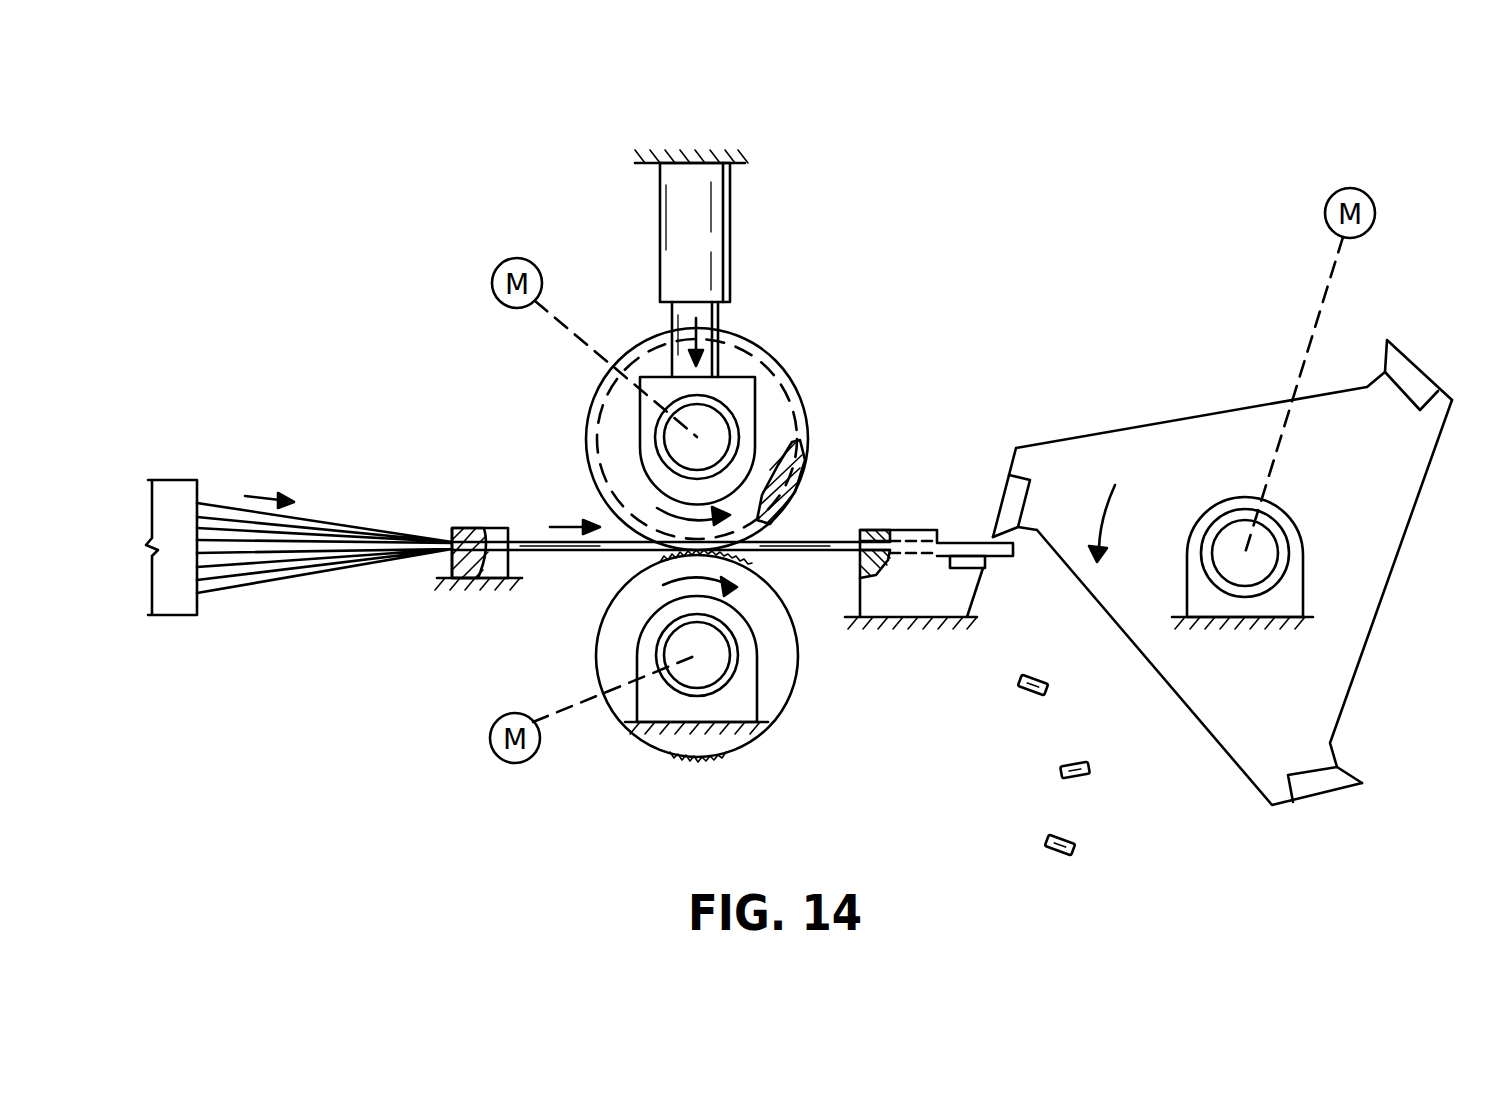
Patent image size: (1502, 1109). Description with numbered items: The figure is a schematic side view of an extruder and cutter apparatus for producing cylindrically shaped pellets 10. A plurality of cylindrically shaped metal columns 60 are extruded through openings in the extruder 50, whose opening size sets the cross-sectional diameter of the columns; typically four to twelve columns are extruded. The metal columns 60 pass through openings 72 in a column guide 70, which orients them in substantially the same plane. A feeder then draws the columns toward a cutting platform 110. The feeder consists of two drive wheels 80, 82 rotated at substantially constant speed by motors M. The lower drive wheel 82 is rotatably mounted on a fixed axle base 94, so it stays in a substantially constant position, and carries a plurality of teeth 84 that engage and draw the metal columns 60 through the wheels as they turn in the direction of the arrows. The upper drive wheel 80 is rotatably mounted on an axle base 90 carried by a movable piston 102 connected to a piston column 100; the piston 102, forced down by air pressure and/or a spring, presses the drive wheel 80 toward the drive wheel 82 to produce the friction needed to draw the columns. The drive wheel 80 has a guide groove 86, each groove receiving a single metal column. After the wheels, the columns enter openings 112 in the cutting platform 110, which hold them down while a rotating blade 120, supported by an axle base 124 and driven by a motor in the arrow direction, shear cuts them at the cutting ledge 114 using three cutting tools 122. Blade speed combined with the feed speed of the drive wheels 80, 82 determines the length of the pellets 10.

The pellets 10 is at (1012, 708).
The extruder 50 is at (172, 495).
The metal columns 60 is at (263, 587).
The column guide 70 is at (498, 528).
The openings 72 is at (470, 528).
The drive wheel 80 is at (815, 392).
The drive wheel 82 is at (795, 708).
The teeth 84 is at (695, 758).
The guide groove 86 is at (803, 466).
The axle base 90 is at (745, 400).
The axle base 94 is at (650, 638).
The piston column 100 is at (720, 222).
The movable piston 102 is at (707, 318).
The cutting platform 110 is at (906, 622).
The openings 112 is at (875, 535).
The cutting ledge 114 is at (988, 562).
The rotating blade 120 is at (1203, 430).
The cutting tools 122 is at (990, 538).
The axle base 124 is at (1287, 592).